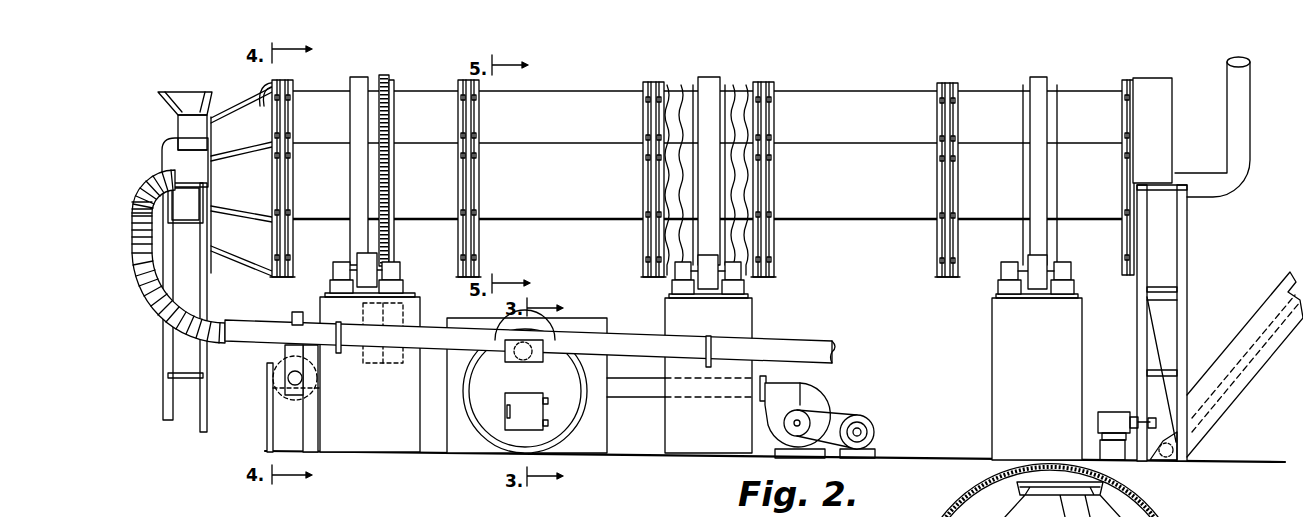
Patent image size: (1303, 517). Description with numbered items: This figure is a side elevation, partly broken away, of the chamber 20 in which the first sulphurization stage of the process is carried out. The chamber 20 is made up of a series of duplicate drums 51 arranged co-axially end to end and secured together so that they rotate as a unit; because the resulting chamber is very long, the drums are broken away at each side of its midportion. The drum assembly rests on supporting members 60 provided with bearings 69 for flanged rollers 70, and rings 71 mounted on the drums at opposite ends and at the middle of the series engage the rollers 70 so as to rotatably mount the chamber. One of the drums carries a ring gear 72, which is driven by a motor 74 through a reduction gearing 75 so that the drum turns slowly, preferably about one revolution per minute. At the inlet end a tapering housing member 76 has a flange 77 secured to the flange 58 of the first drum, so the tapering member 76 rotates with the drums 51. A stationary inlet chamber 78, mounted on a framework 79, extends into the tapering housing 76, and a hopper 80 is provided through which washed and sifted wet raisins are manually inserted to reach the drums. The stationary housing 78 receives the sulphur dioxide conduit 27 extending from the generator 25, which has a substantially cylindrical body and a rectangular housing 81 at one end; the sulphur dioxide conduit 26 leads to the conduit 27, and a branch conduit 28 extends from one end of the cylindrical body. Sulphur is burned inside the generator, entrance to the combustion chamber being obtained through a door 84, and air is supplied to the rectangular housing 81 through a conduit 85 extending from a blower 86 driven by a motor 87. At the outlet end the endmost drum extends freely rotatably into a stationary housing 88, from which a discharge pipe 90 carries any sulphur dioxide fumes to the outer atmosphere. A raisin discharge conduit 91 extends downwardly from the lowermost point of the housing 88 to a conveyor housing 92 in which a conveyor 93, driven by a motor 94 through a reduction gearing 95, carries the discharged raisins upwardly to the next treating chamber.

The chamber 20 is at (739, 162).
The generator 25 is at (536, 406).
The sulphur dioxide conduit 26 is at (535, 342).
The sulphur dioxide conduit 27 is at (134, 225).
The branch conduit 28 is at (643, 328).
The drums 51 is at (329, 95).
The flange 58 is at (300, 110).
The supporting members 60 is at (420, 303).
The bearings 69 is at (400, 272).
The flanged rollers 70 is at (392, 252).
The rings 71 is at (709, 87).
The ring gear 72 is at (385, 165).
The motor 74 is at (312, 383).
The reduction gearing 75 is at (290, 318).
The tapering housing member 76 is at (256, 168).
The flange 77 is at (263, 90).
The inlet chamber 78 is at (180, 160).
The framework 79 is at (208, 390).
The hopper 80 is at (190, 103).
The rectangular housing 81 is at (453, 437).
The door 84 is at (518, 420).
The conduit 85 is at (632, 390).
The blower 86 is at (812, 405).
The motor 87 is at (870, 422).
The stationary housing 88 is at (1160, 104).
The discharge pipe 90 is at (1233, 118).
The raisin discharge conduit 91 is at (1165, 330).
The conveyor housing 92 is at (1245, 364).
The conveyor 93 is at (1215, 375).
The motor 94 is at (1112, 415).
The reduction gearing 95 is at (1150, 418).